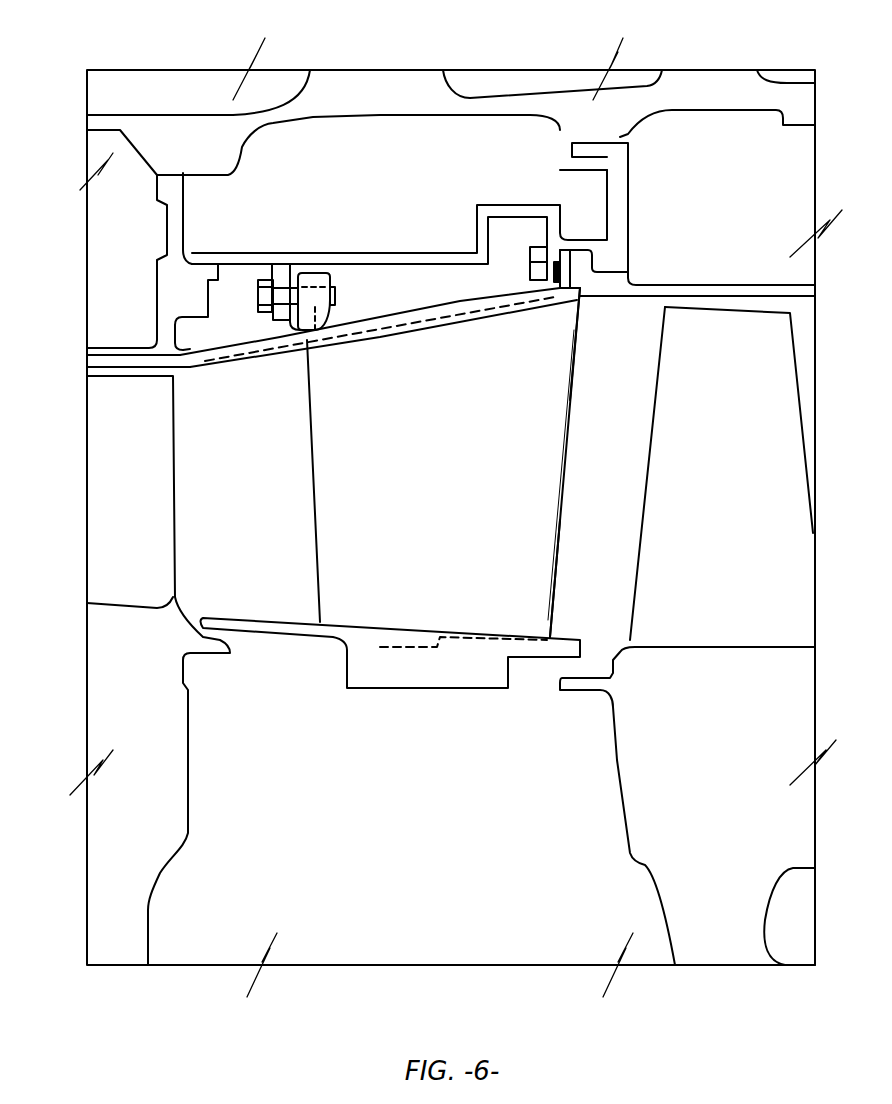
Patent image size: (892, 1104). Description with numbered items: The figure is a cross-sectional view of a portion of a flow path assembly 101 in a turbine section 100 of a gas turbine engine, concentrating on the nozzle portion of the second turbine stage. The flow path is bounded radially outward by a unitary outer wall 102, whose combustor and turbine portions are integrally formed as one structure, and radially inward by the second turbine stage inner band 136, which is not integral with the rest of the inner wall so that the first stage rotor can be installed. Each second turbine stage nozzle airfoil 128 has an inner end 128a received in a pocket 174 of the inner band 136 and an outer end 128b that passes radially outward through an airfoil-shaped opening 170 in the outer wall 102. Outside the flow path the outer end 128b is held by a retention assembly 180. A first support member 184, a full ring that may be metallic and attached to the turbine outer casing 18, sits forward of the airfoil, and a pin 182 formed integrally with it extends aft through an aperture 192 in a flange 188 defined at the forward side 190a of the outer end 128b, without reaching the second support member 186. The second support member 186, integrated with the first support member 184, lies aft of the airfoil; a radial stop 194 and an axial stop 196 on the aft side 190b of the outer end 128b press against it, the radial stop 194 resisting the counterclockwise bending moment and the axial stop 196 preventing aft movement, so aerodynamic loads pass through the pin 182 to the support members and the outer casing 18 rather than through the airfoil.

The turbine outer casing 18 is at (172, 128).
The turbine section 100 is at (103, 462).
The flow path assembly 101 is at (125, 360).
The unitary outer wall 102 is at (220, 357).
The second turbine stage nozzle airfoil 128 is at (330, 513).
The inner end 128a is at (562, 633).
The outer end 128b is at (593, 305).
The second turbine stage inner band 136 is at (273, 622).
The opening 170 is at (432, 305).
The pocket 174 is at (398, 632).
The retention assembly 180 is at (312, 192).
The pin 182 is at (294, 285).
The first support member 184 is at (227, 258).
The second support member 186 is at (582, 243).
The flange 188 is at (312, 277).
The forward side 190a is at (352, 299).
The aft side 190b is at (515, 265).
The aperture 192 is at (313, 307).
The radial stop 194 is at (557, 283).
The axial stop 196 is at (530, 252).